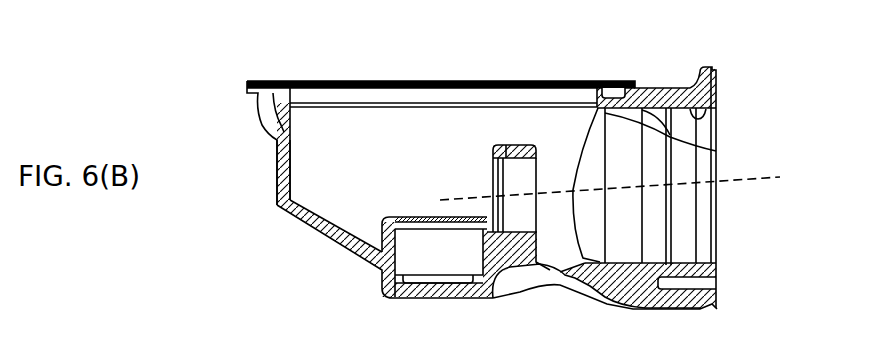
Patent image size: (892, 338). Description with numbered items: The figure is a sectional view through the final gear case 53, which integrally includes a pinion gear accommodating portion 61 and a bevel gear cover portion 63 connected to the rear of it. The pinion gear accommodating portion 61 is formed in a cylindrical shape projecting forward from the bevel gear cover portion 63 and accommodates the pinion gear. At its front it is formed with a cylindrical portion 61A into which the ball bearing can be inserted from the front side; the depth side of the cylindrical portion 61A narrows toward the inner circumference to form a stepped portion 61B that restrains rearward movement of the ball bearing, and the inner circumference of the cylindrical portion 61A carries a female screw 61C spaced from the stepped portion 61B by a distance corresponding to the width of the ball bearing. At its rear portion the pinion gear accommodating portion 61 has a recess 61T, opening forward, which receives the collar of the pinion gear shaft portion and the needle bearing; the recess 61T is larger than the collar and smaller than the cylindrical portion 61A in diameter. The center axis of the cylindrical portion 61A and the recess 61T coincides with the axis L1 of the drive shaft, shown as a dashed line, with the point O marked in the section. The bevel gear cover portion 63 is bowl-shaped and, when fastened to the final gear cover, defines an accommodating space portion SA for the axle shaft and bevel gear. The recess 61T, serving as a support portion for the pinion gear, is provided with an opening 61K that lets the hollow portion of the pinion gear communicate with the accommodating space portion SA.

The final gear case 53 is at (236, 58).
The bevel gear cover portion 63 is at (275, 174).
The accommodating space portion SA is at (378, 140).
The center point O is at (440, 118).
The pinion gear accommodating portion 61 is at (704, 62).
The cylindrical portion 61A is at (712, 100).
The stepped portion 61B is at (716, 152).
The female screw 61C is at (716, 124).
The recess 61T is at (517, 140).
The opening 61K is at (491, 192).
The axis of the drive shaft L1 is at (780, 178).